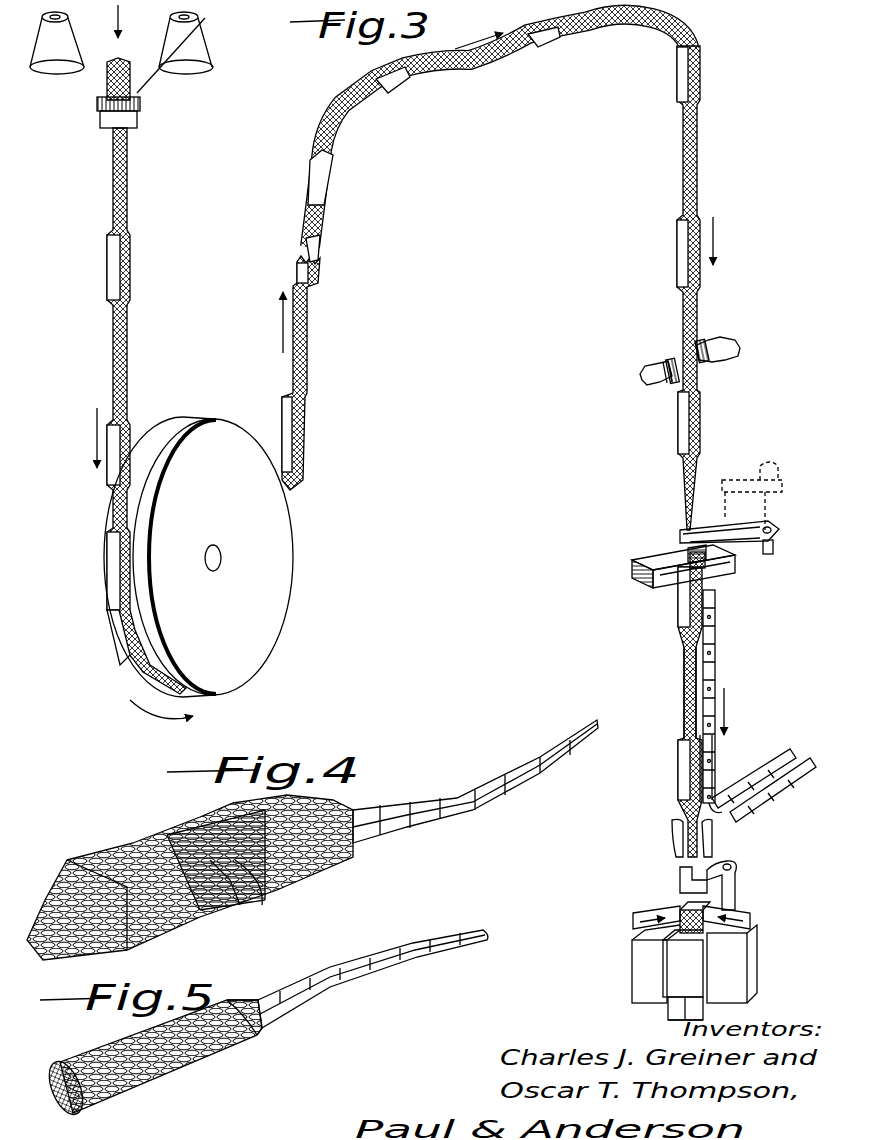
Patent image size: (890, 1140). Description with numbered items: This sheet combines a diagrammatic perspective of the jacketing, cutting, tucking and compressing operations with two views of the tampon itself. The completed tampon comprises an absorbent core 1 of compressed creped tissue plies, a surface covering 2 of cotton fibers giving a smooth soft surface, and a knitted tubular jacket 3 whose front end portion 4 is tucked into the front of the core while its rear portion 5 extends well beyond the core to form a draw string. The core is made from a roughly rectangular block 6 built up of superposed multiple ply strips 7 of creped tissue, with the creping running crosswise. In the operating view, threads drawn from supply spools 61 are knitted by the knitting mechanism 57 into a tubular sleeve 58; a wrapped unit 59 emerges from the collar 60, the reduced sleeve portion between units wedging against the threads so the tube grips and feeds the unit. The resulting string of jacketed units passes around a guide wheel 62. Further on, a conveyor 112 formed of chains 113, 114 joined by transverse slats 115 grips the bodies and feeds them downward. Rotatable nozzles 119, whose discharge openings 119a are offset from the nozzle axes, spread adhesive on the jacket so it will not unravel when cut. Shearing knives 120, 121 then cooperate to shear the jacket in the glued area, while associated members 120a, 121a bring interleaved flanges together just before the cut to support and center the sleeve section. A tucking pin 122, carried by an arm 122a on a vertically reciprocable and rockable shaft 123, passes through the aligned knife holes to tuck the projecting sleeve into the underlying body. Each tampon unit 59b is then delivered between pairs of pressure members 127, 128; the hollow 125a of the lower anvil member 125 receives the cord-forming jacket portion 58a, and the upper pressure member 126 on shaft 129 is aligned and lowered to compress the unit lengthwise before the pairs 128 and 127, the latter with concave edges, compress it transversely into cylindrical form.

In FIG. 5, the absorbent core 1 is at (100, 1090).
In FIG. 4, the surface covering 2 is at (207, 826).
In FIG. 5, the surface covering 2 is at (100, 1055).
In FIG. 4, the tubular jacket 3 is at (352, 842).
In FIG. 5, the tubular jacket 3 is at (172, 1060).
In FIG. 5, the front end portion 4 is at (63, 1100).
In FIG. 5, the rear portion 5 is at (355, 975).
In FIG. 4, the block of creped tissue sheets 6 is at (215, 862).
In FIG. 4, the multiple ply strips 7 is at (240, 860).
In FIG. 3, the knitting mechanism 57 is at (143, 110).
In FIG. 3, the tubular sleeve 58 is at (113, 180).
In FIG. 3, the jacket portion 58a is at (686, 492).
In FIG. 3, the wrapped unit 59 is at (102, 86).
In FIG. 3, the tampon unit 59b is at (682, 775).
In FIG. 3, the collar 60 is at (103, 118).
In FIG. 3, the supply spools 61 is at (50, 70).
In FIG. 3, the guide wheel 62 is at (263, 585).
In FIG. 3, the conveyor 112 is at (716, 647).
In FIG. 3, the chain 113 is at (767, 771).
In FIG. 3, the chain 114 is at (782, 783).
In FIG. 3, the transverse cleats or slats 115 is at (795, 757).
In FIG. 3, the nozzle 119 is at (672, 362).
In FIG. 3, the discharge opening 119a is at (697, 366).
In FIG. 3, the shearing knife 120 is at (643, 562).
In FIG. 3, the member 120a is at (668, 574).
In FIG. 3, the shearing knife 121 is at (718, 535).
In FIG. 3, the member 121a is at (715, 556).
In FIG. 3, the tucking pin 122 is at (680, 546).
In FIG. 3, the arm 122a is at (745, 480).
In FIG. 3, the shaft 123 is at (776, 538).
In FIG. 3, the lower anvil member 125 is at (668, 1010).
In FIG. 3, the hollow 125a is at (665, 1018).
In FIG. 3, the upper pressure member 126 is at (680, 880).
In FIG. 3, the pair of compression members 127 is at (632, 975).
In FIG. 3, the pair of pressure members 128 is at (640, 911).
In FIG. 3, the shaft 129 is at (736, 892).